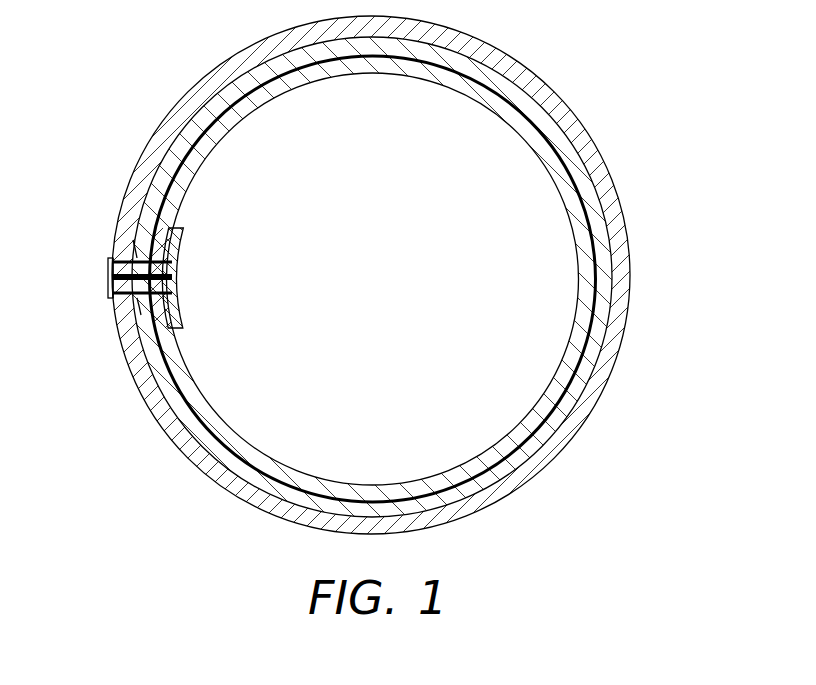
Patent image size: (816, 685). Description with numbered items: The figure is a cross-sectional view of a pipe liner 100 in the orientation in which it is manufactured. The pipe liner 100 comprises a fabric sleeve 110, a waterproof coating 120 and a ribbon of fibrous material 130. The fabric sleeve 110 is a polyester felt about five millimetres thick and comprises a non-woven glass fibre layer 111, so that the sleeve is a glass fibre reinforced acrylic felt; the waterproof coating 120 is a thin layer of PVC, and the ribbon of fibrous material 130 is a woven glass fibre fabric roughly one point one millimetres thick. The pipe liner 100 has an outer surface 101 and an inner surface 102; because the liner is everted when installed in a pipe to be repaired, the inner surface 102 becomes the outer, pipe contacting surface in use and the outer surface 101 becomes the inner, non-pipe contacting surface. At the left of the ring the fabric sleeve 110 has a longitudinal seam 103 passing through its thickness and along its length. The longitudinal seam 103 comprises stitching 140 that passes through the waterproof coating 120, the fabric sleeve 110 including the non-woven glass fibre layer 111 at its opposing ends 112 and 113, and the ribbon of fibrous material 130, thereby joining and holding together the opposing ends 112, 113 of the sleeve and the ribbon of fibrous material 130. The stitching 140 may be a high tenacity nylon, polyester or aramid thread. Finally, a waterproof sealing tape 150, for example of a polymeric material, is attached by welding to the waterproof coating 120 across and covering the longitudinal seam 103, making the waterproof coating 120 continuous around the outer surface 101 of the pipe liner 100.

The pipe liner 100 is at (637, 83).
The outer surface 101 is at (222, 67).
The inner surface 102 is at (257, 106).
The longitudinal seam 103 is at (108, 278).
The fabric sleeve 110 is at (252, 458).
The non-woven glass fibre layer 111 is at (573, 377).
The opposing end 112 is at (137, 257).
The opposing end 113 is at (138, 303).
The waterproof coating 120 is at (479, 47).
The ribbon of fibrous material 130 is at (178, 307).
The stitching 140 is at (108, 260).
The waterproof sealing tape 150 is at (112, 257).